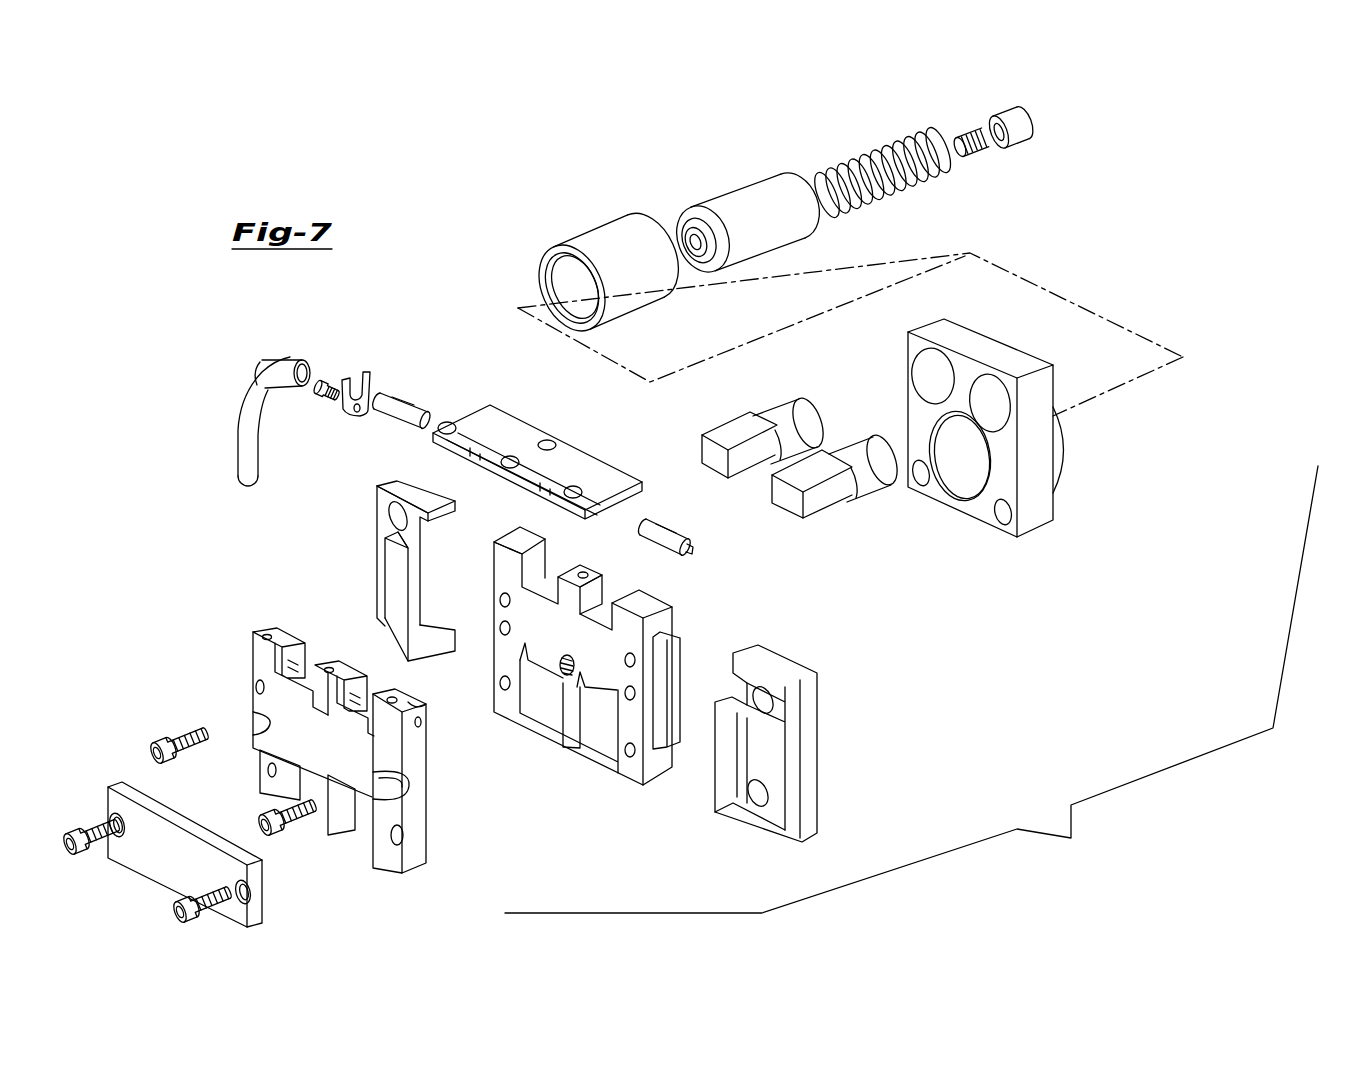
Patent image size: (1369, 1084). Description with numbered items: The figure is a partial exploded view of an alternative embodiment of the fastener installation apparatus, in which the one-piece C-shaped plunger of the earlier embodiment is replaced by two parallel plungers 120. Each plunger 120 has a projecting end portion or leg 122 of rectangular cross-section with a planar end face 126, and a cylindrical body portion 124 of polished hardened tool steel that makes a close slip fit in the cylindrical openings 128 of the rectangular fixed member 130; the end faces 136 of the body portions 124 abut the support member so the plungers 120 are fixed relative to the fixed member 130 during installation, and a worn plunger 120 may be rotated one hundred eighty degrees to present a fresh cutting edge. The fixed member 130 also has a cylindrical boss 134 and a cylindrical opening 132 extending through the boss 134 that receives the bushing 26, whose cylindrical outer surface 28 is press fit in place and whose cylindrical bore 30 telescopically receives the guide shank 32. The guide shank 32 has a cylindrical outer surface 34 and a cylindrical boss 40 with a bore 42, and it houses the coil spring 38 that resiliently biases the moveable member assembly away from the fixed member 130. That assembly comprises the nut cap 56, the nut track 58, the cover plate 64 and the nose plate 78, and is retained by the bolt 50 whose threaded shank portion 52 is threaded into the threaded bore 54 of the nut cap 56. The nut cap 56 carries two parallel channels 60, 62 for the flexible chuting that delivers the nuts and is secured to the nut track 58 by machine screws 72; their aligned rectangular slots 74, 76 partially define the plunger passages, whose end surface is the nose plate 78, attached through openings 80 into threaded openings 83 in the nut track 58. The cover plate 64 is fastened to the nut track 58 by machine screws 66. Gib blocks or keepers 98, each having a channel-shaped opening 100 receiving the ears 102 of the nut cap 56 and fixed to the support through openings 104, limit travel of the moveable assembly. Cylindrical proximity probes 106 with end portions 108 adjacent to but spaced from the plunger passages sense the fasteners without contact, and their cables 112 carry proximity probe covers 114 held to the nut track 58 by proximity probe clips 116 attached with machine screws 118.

The bushing 26 is at (595, 249).
The cylindrical outer surface 28 is at (607, 233).
The cylindrical bore 30 is at (565, 272).
The guide shank 32 is at (743, 220).
The cylindrical outer surface 34 is at (776, 247).
The coil spring 38 is at (882, 195).
The cylindrical boss 40 is at (696, 216).
The bore 42 is at (694, 264).
The bolt 50 is at (994, 154).
The threaded shank portion 52 is at (988, 150).
The threaded bore 54 is at (565, 657).
The nut cap 56 is at (612, 687).
The nut track 58 is at (389, 876).
The channel 60 is at (596, 748).
The channel 62 is at (547, 722).
The cover plate 64 is at (179, 866).
The machine screws 66 is at (170, 905).
The machine screws 72 is at (258, 809).
The rectangular slot 74 is at (605, 600).
The rectangular slot 76 is at (353, 701).
The nose plate 78 is at (537, 444).
The openings 80 is at (506, 457).
The threaded openings 83 is at (267, 633).
The gib blocks or keepers 98 is at (591, 669).
The channel-shaped opening 100 is at (437, 574).
The ears 102 is at (677, 663).
The openings 104 is at (393, 523).
The proximity probe 106 is at (400, 407).
The end surface 108 is at (405, 428).
The cables 112 is at (242, 437).
The proximity probe cover 114 is at (277, 362).
The clip 116 is at (365, 372).
The machine screws 118 is at (320, 400).
The plungers 120 is at (785, 471).
The projecting end portion or leg 122 is at (712, 432).
The body portion 124 is at (782, 403).
The planar end face 126 is at (780, 500).
The cylindrical openings 128 is at (987, 393).
The fixed member 130 is at (1020, 431).
The cylindrical opening 132 is at (975, 467).
The cylindrical boss 134 is at (1062, 448).
The end faces 136 is at (895, 440).